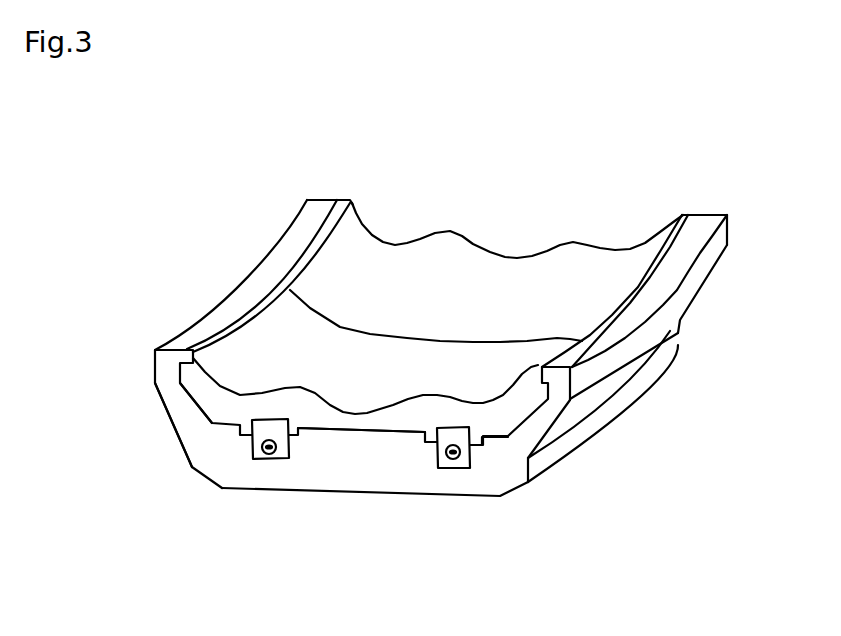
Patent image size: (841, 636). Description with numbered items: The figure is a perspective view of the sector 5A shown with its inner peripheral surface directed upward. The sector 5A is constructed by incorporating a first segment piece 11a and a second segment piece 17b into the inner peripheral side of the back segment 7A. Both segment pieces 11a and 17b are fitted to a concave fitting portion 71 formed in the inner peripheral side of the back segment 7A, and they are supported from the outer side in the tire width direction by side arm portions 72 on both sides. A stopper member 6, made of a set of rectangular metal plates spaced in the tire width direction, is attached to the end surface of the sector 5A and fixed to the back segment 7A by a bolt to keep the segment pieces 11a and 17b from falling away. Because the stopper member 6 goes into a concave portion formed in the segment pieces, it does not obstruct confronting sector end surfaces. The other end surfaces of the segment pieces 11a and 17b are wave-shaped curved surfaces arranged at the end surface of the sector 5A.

The sector 5A is at (613, 198).
The first segment piece 11a is at (343, 268).
The second segment piece 17b is at (260, 343).
The side arm portions 72 is at (178, 400).
The stopper member 6 is at (250, 446).
The back segment 7A is at (268, 477).
The concave fitting portion 71 is at (392, 428).